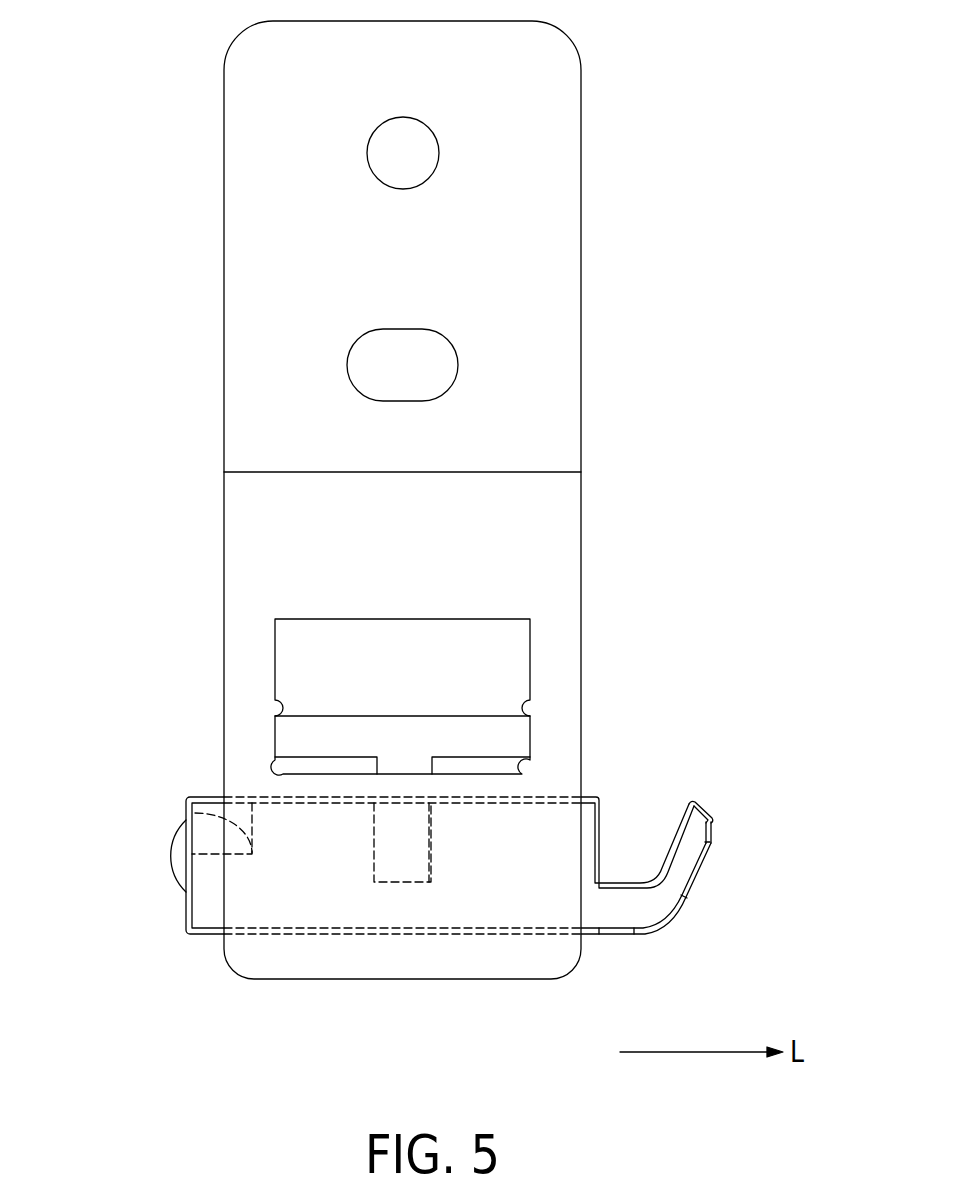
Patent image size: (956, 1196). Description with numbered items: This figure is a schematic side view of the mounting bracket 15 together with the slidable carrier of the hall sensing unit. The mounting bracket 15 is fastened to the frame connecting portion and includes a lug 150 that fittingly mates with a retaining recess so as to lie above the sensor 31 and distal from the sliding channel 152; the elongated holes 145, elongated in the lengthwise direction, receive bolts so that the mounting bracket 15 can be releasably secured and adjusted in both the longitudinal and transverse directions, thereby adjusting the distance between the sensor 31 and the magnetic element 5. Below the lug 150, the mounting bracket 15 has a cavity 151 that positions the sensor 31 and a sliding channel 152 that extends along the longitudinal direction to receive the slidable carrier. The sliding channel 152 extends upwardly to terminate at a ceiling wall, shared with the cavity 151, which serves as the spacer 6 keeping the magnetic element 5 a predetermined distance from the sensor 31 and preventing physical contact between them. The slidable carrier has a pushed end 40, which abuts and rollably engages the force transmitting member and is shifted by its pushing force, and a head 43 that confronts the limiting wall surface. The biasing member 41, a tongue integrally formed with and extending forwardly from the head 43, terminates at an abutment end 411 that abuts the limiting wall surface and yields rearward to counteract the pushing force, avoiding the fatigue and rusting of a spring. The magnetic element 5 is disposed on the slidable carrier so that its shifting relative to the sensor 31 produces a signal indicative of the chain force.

The mounting bracket 15 is at (222, 547).
The elongated holes 145 is at (402, 152).
The lug 150 is at (549, 447).
The cavity 151 is at (530, 740).
The sensor 31 is at (397, 735).
The spacer 6 is at (347, 785).
The pushed end 40 is at (168, 853).
The sliding channel 152 is at (292, 930).
The magnetic element 5 is at (413, 832).
The head 43 is at (617, 887).
The abutment end 411 is at (688, 863).
The biasing member 41 is at (669, 935).